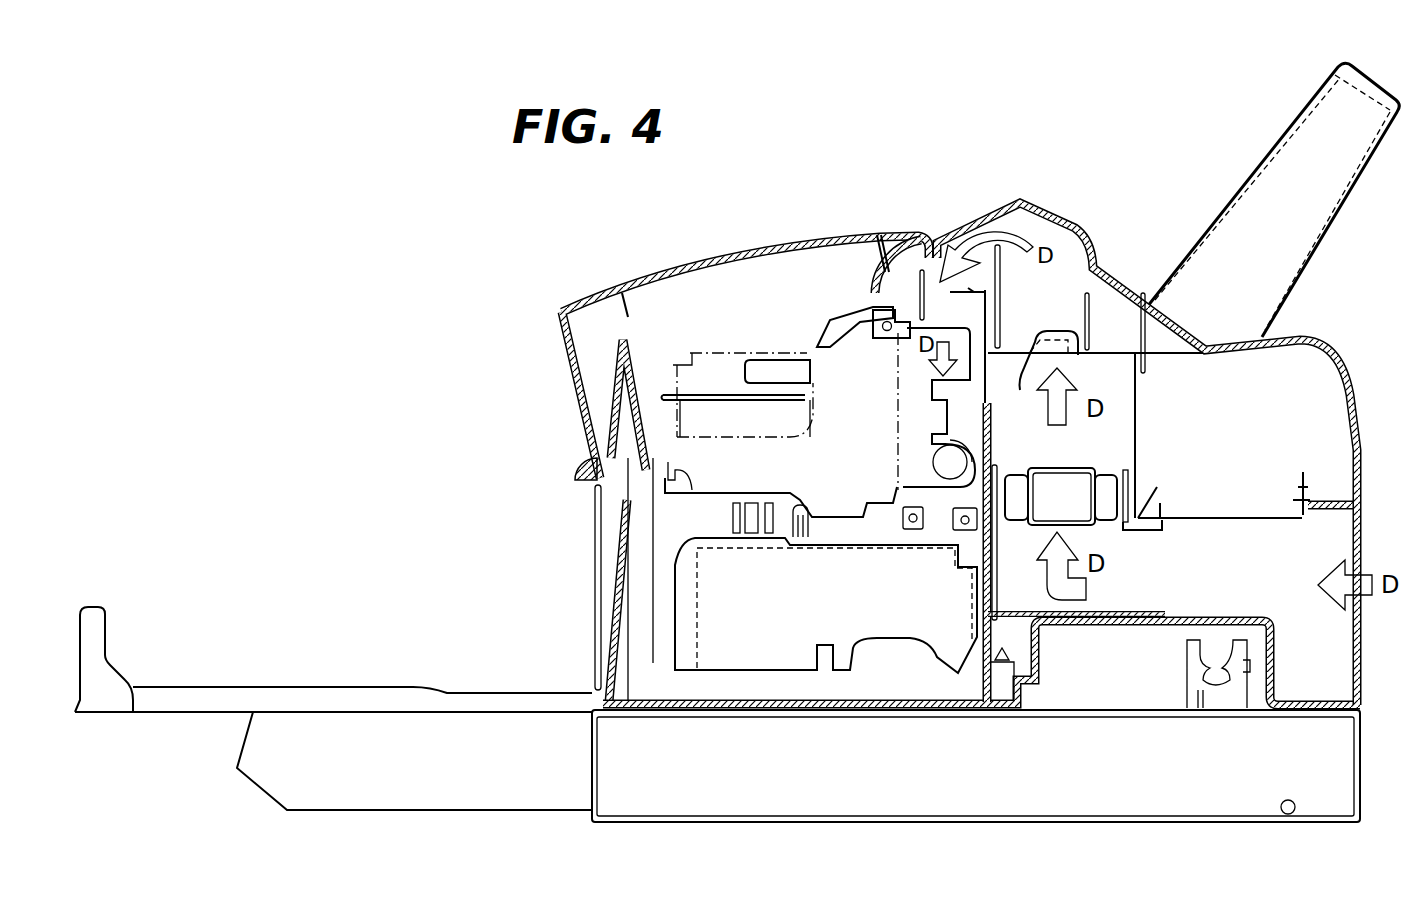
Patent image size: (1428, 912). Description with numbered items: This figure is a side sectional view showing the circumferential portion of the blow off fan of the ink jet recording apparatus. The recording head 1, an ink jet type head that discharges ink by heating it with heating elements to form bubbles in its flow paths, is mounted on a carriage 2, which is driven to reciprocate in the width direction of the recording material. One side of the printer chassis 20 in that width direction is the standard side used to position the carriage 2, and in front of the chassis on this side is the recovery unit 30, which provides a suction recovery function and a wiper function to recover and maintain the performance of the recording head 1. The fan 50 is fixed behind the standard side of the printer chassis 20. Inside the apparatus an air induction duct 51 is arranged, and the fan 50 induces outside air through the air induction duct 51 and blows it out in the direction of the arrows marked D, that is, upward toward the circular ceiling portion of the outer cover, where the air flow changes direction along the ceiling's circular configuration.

The recording head 1 is at (729, 420).
The carriage 2 is at (857, 387).
The printer chassis 20 is at (988, 292).
The recovery unit 30 is at (727, 580).
The fan 50 is at (1107, 478).
The air induction duct 51 is at (1313, 548).